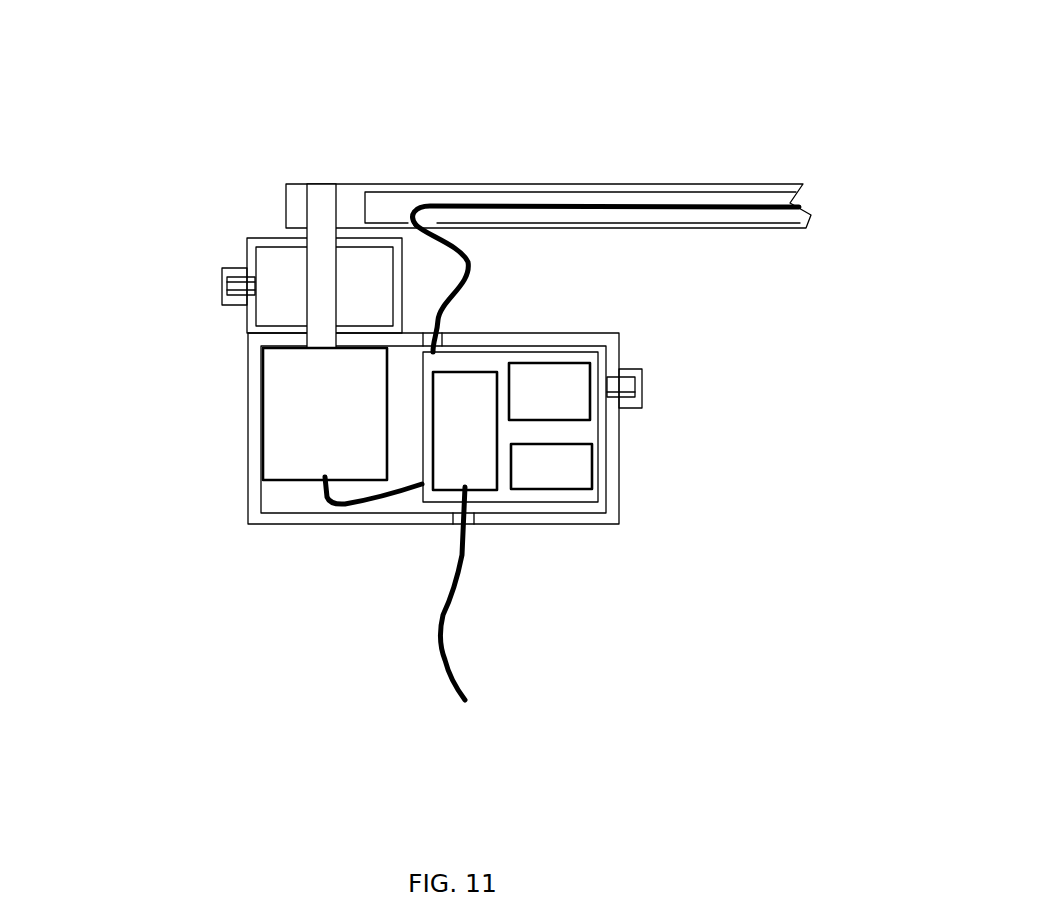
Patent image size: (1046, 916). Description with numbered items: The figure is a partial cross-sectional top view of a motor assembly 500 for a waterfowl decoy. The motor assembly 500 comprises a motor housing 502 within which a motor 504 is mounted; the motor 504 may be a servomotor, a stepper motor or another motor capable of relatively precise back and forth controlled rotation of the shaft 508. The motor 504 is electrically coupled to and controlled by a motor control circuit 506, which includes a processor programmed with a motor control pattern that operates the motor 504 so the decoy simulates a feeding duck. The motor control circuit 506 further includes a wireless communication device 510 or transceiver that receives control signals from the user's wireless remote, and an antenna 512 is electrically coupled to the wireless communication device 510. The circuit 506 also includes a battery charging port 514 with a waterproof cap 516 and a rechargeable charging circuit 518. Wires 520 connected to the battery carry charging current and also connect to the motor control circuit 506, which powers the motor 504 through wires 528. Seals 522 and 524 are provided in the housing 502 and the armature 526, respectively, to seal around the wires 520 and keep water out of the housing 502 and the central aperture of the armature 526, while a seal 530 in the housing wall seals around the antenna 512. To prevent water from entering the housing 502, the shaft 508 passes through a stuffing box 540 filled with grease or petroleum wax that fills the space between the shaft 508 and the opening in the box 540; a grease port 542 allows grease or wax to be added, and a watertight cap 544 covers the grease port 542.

The motor assembly 500 is at (537, 125).
The motor housing 502 is at (252, 506).
The motor 504 is at (277, 427).
The motor control circuit 506 is at (587, 496).
The shaft 508 is at (307, 312).
The wireless communication device 510 is at (453, 480).
The antenna 512 is at (437, 648).
The battery charging port 514 is at (627, 397).
The waterproof cap 516 is at (642, 387).
The rechargeable charging circuit 518 is at (575, 377).
The wires 520 is at (602, 212).
The seal 522 is at (440, 345).
The seal 524 is at (418, 230).
The armature 526 is at (685, 223).
The wires 528 is at (332, 502).
The seal 530 is at (470, 527).
The stuffing box 540 is at (243, 248).
The grease port 542 is at (227, 297).
The watertight cap 544 is at (233, 303).